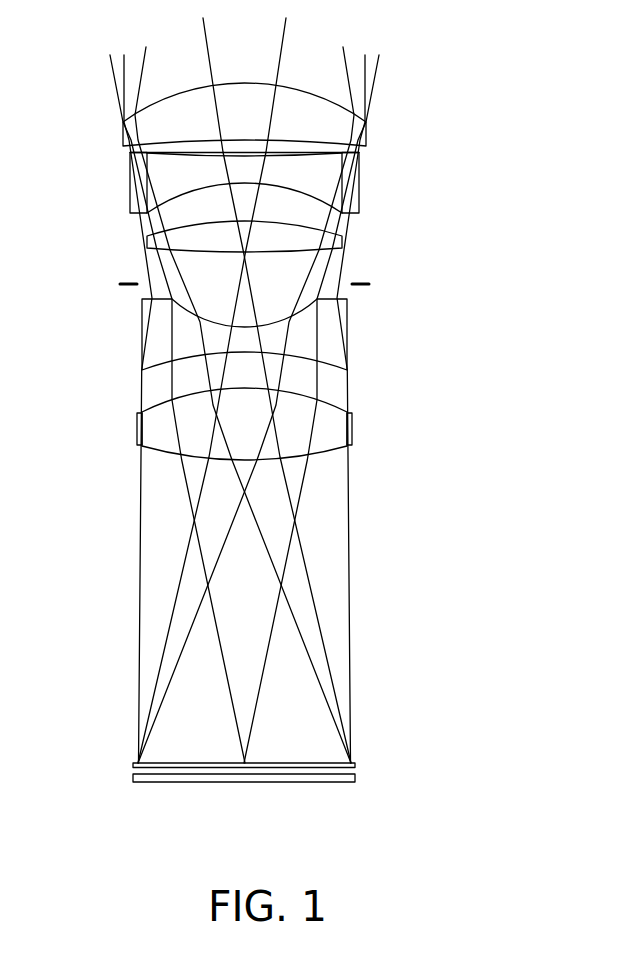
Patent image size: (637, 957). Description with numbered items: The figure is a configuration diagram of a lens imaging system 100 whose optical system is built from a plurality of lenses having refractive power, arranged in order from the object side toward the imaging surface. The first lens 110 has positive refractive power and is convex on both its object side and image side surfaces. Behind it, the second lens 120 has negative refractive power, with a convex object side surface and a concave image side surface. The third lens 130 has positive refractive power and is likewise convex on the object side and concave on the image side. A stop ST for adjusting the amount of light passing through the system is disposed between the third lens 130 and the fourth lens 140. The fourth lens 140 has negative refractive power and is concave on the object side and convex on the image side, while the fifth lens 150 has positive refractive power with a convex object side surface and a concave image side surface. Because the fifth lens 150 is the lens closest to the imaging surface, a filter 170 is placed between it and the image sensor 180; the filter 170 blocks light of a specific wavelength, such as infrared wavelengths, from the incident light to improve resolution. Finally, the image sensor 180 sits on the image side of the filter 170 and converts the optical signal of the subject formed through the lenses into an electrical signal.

The lens imaging system 100 is at (420, 191).
The first lens 110 is at (125, 138).
The second lens 120 is at (130, 196).
The third lens 130 is at (146, 238).
The stop ST is at (369, 284).
The fourth lens 140 is at (142, 331).
The fifth lens 150 is at (137, 426).
The filter 170 is at (133, 764).
The image sensor 180 is at (133, 778).